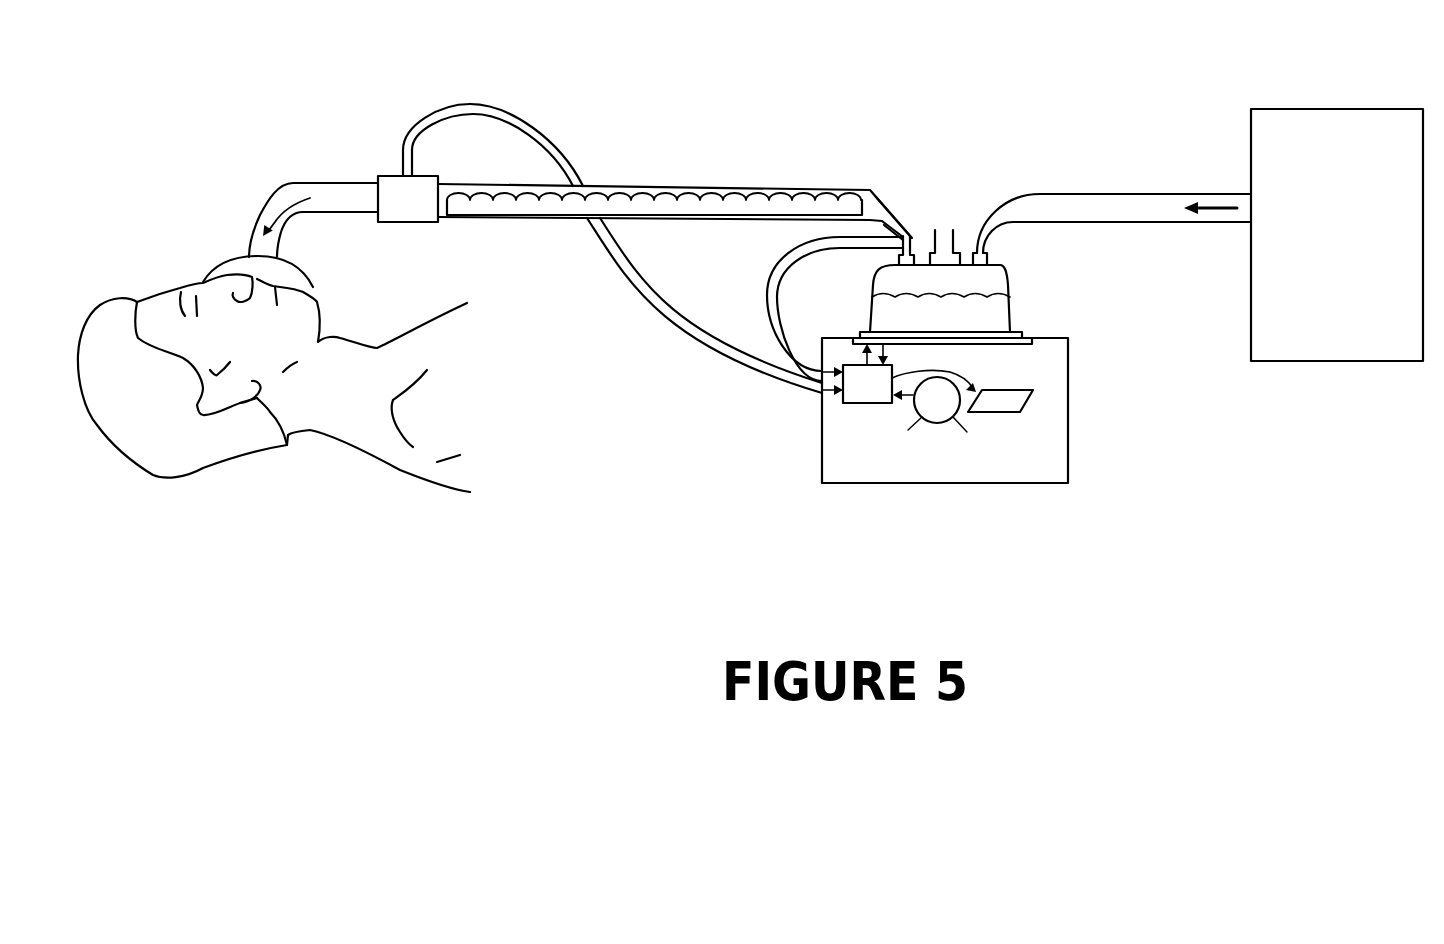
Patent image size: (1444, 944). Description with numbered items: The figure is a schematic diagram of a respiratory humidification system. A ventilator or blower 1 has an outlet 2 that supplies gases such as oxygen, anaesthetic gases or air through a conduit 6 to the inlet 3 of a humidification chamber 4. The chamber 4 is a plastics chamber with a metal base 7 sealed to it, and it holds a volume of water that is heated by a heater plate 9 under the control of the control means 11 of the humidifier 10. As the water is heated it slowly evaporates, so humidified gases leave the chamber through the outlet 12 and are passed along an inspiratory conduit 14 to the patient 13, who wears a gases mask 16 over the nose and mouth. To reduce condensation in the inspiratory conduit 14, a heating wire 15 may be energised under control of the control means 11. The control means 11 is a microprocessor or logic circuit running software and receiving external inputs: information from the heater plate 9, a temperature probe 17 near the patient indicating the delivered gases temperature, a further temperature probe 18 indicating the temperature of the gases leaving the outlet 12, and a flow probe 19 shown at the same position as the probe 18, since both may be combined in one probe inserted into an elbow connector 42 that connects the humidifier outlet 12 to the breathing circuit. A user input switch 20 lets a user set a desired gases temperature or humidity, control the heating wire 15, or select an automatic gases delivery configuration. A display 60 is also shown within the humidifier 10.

The ventilator 1 is at (1308, 362).
The outlet 2 is at (1223, 223).
The inlet 3 is at (985, 259).
The humidification chamber 4 is at (1010, 290).
The conduit 6 is at (1147, 194).
The metal base 7 is at (1022, 333).
The heater plate 9 is at (1017, 345).
The humidifier 10 is at (1068, 481).
The control means 11 is at (848, 405).
The outlet 12 is at (899, 259).
The patient 13 is at (312, 436).
The inspiratory conduit 14 is at (688, 187).
The heating wire 15 is at (618, 197).
The gases mask 16 is at (245, 248).
The temperature probe 17 is at (396, 168).
The temperature probe 18 is at (904, 236).
The flow probe 19 is at (908, 237).
The switch 20 is at (937, 423).
The elbow connector 42 is at (944, 249).
The display 60 is at (1027, 405).